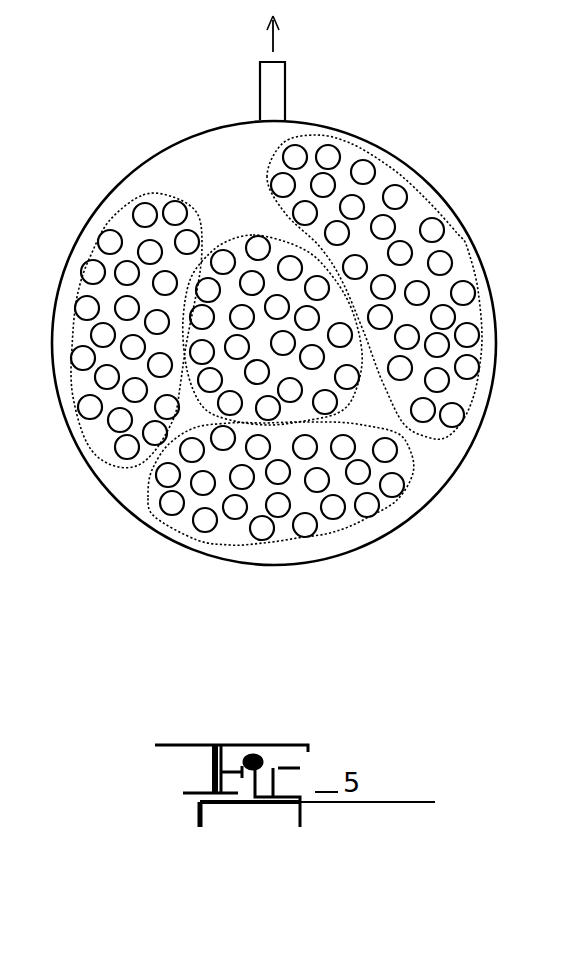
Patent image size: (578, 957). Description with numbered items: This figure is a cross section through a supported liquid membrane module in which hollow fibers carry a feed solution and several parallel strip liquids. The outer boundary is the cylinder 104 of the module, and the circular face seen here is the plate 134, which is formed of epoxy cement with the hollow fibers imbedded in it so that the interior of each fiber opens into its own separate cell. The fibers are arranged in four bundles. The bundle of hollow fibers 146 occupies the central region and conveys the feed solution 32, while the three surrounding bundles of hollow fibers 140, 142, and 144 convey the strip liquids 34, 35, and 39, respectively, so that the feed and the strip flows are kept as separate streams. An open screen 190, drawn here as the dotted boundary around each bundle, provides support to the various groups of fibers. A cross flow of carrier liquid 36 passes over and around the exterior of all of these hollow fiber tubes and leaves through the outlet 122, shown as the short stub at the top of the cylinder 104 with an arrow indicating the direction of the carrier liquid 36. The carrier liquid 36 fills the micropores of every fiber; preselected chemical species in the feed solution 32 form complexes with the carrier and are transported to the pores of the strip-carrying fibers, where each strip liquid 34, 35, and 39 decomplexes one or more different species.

The feed solution 32 is at (257, 258).
The strip solution 34 is at (440, 261).
The strip solution 35 is at (205, 528).
The carrier liquid 36 is at (272, 45).
The strip solution 39 is at (93, 272).
The cylinder 104 is at (493, 347).
The outlet 122 is at (288, 82).
The plate 134 is at (222, 148).
The hollow fibers 140 is at (92, 255).
The hollow fibers 142 is at (215, 523).
The hollow fibers 144 is at (455, 267).
The hollow fibers 146 is at (349, 378).
The screen 190 is at (225, 243).